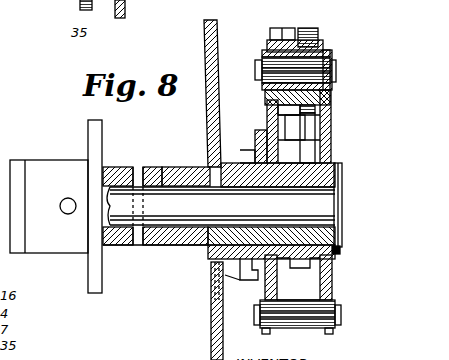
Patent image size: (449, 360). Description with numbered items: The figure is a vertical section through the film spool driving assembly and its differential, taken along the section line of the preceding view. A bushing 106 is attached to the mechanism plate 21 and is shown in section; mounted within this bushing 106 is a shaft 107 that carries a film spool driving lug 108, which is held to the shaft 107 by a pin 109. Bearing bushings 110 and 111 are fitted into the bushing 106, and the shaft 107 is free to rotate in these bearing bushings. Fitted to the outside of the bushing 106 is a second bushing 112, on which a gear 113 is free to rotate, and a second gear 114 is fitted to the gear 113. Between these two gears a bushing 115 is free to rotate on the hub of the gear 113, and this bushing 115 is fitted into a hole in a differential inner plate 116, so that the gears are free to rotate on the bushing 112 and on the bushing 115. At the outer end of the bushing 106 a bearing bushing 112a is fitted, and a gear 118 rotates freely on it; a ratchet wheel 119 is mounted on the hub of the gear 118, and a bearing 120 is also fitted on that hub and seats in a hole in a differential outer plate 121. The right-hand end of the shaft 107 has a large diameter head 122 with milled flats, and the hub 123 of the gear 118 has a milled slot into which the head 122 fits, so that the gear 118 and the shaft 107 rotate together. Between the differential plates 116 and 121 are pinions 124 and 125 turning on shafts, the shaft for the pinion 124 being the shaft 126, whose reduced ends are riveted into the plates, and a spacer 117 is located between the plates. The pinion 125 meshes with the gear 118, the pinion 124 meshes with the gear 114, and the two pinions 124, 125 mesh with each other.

The mechanism plate 21 is at (228, 88).
The bushing 106 is at (182, 170).
The shaft 107 is at (152, 228).
The film spool driving lug 108 is at (57, 168).
The pin 109 is at (137, 172).
The bearing bushing 110 is at (180, 230).
The bearing bushing 111 is at (331, 238).
The second bushing 112 is at (216, 278).
The bearing bushing 112a is at (312, 163).
The gear 113 is at (214, 293).
The second gear 114 is at (272, 142).
The bushing 115 is at (248, 280).
The differential inner plate 116 is at (266, 97).
The spacer 117 is at (316, 324).
The gear 118 is at (316, 138).
The ratchet wheel 119 is at (296, 280).
The bearing 120 is at (336, 254).
The differential outer plate 121 is at (330, 58).
The large diameter head 122 is at (337, 207).
The hub 123 is at (312, 280).
The pinion 124 is at (278, 28).
The pinion 125 is at (306, 32).
The shaft 126 is at (262, 72).